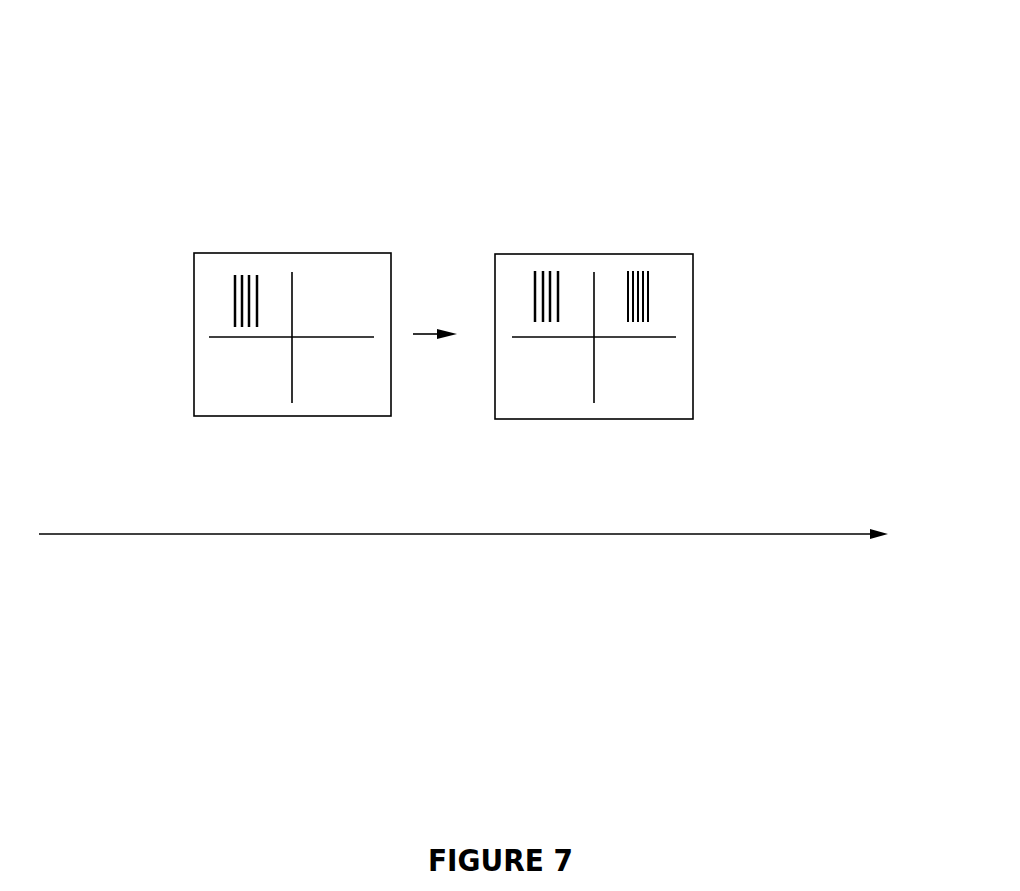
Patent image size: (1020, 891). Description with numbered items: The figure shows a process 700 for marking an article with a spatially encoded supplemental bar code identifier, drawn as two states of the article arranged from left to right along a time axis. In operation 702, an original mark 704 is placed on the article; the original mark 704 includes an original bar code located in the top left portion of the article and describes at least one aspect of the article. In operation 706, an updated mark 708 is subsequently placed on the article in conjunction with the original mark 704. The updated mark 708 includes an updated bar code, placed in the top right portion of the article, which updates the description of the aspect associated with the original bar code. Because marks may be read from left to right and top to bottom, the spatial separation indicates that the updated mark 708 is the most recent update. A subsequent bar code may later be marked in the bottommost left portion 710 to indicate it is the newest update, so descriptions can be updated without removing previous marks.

The process 700 is at (785, 105).
The operation 702 is at (340, 159).
The original mark 704 is at (204, 306).
The operation 706 is at (606, 215).
The updated mark 708 is at (670, 268).
The bottommost left portion 710 is at (580, 431).